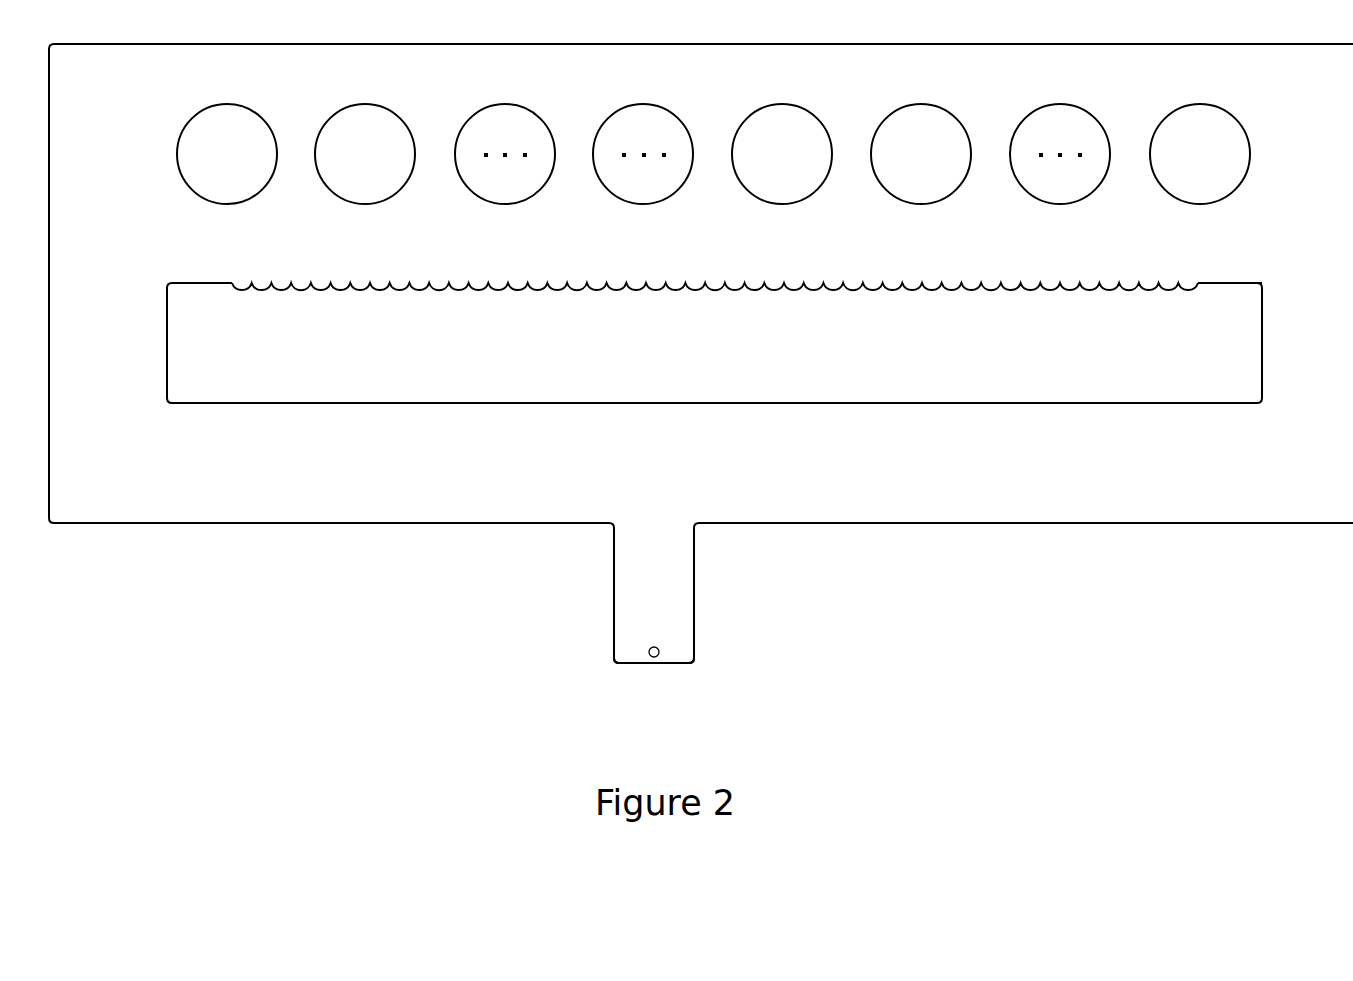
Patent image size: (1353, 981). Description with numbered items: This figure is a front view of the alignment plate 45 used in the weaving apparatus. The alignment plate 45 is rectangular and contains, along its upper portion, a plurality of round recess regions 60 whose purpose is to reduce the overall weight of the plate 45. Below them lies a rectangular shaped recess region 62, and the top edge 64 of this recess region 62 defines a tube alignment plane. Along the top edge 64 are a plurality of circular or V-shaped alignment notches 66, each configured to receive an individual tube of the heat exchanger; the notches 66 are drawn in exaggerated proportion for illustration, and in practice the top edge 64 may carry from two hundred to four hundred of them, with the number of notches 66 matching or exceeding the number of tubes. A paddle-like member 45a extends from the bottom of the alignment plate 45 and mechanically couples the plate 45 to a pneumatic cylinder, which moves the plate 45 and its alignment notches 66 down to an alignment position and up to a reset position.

The alignment plate 45 is at (945, 507).
The paddle-like member 45a is at (694, 592).
The round recess regions 60 is at (213, 165).
The rectangular shaped recess region 62 is at (675, 364).
The top edge 64 is at (1203, 282).
The alignment notches 66 is at (1150, 290).